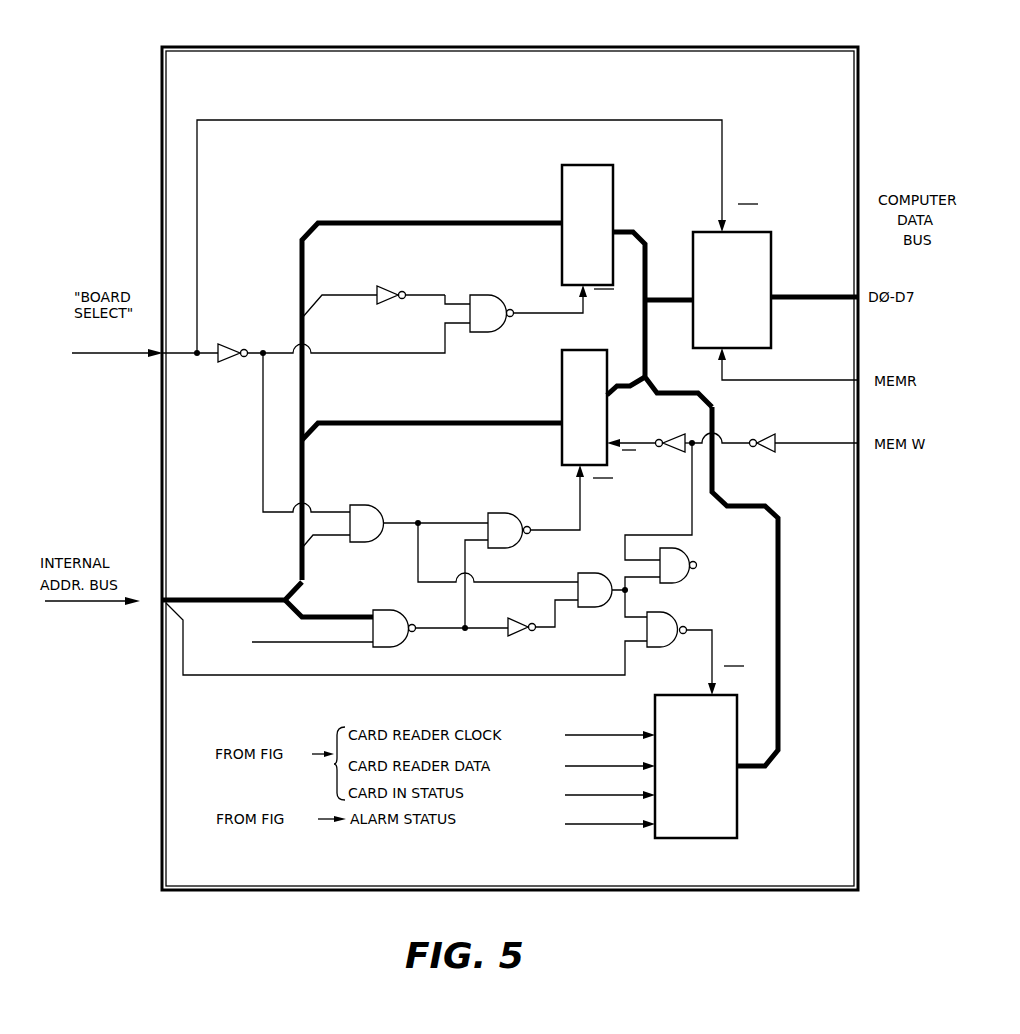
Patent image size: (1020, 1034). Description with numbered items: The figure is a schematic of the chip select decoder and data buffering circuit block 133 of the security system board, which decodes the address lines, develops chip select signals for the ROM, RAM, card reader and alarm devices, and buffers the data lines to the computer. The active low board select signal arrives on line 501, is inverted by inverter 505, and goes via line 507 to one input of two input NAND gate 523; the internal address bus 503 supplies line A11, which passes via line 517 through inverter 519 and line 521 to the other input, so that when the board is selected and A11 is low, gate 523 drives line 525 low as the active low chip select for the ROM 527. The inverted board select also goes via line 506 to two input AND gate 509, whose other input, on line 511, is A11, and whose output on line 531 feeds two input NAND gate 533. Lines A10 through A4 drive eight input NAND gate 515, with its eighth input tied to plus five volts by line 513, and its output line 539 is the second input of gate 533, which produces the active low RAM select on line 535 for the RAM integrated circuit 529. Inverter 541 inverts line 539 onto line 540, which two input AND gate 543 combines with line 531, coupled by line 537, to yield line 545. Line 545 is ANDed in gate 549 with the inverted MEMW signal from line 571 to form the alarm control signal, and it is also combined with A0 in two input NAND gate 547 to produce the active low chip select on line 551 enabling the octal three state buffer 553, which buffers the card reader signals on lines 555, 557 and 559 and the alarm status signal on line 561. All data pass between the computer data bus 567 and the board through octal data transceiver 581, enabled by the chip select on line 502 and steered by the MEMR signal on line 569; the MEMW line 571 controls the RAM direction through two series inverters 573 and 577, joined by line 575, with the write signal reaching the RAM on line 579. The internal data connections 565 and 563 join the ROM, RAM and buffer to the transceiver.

The circuit block 133 is at (493, 47).
The line 501 is at (172, 347).
The line 502 is at (342, 120).
The bus 503 is at (168, 594).
The inverter 505 is at (228, 346).
The line 506 is at (263, 410).
The line 507 is at (330, 353).
The two input AND gate 509 is at (368, 505).
The A11 line 511 is at (350, 542).
The line 513 is at (330, 645).
The eight input NAND gate 515 is at (406, 613).
The line 517 is at (369, 283).
The inverter 519 is at (406, 288).
The line 521 is at (440, 298).
The two input NAND gate 523 is at (497, 295).
The line 525 is at (553, 315).
The ROM 527 is at (613, 183).
The RAM integrated circuit 529 is at (586, 350).
The line 531 is at (444, 516).
The two input NAND gate 533 is at (502, 511).
The line 535 is at (582, 522).
The line 537 is at (508, 582).
The line 539 is at (476, 627).
The line 540 is at (560, 610).
The inverter 541 is at (534, 620).
The two input AND gate 543 is at (590, 568).
The line 545 is at (626, 592).
The two input NAND gate 547 is at (686, 618).
The gate 549 is at (680, 583).
The line 551 is at (712, 645).
The octal three state buffer 553 is at (730, 697).
The line 555 is at (634, 734).
The line 557 is at (634, 764).
The line 559 is at (631, 794).
The line 561 is at (629, 824).
The D0-D3 data bus 563 is at (778, 706).
The internal data bus 565 is at (651, 296).
The computer data bus 567 is at (785, 295).
The line 569 is at (823, 379).
The MEMW line 571 is at (799, 443).
The inverter 573 is at (769, 431).
The line 575 is at (730, 442).
The inverter 577 is at (667, 434).
The RAM write line 579 is at (620, 442).
The octal data transceiver 581 is at (773, 240).